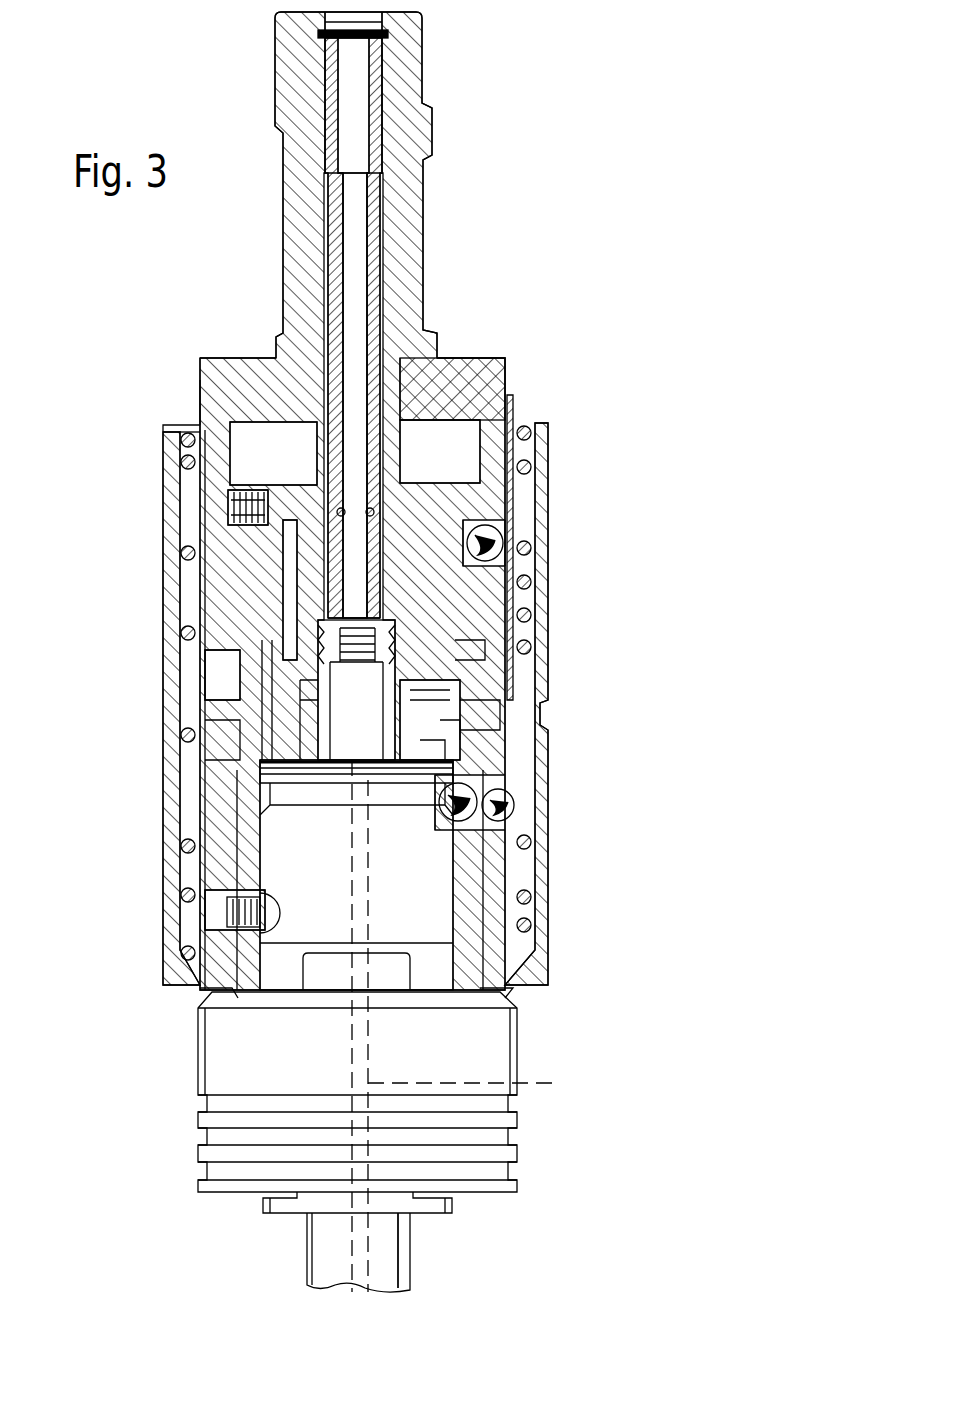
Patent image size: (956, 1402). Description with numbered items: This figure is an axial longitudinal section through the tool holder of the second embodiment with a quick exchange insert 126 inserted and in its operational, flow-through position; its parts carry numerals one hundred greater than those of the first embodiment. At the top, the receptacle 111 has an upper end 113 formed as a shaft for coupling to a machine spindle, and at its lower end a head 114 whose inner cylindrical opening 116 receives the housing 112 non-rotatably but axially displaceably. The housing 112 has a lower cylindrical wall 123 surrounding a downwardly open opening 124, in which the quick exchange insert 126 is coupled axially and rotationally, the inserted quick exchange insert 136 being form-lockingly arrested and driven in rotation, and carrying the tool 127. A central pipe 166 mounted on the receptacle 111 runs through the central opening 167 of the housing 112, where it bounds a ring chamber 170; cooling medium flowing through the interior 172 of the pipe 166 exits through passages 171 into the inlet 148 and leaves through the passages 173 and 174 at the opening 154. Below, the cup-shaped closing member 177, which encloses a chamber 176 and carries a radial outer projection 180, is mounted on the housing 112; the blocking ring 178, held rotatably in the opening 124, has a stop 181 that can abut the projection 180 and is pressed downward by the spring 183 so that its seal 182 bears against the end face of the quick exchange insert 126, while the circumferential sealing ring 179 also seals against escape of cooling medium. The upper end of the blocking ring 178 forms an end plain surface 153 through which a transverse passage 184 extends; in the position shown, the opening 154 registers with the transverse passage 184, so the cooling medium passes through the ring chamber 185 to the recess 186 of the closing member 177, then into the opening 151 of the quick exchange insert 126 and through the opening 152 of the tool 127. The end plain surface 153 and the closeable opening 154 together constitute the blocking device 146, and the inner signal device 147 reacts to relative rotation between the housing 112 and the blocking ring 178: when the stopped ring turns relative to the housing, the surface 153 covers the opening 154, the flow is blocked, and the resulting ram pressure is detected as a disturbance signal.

The receptacle 111 is at (515, 357).
The housing 112 is at (240, 550).
The upper end 113 is at (410, 62).
The head 114 is at (199, 380).
The cylindrical opening 116 is at (478, 360).
The cylindrical wall 123 is at (243, 870).
The opening 124 is at (267, 937).
The quick exchange insert 126 is at (472, 1057).
The tool 127 is at (307, 1272).
The quick exchange insert 136 is at (492, 527).
The blocking device 146 is at (290, 745).
The inner signal device 147 is at (280, 690).
The inlet 148 is at (322, 503).
The opening 151 is at (557, 1083).
The opening 152 is at (368, 1263).
The end plain surface 153 is at (465, 648).
The opening 154 is at (268, 664).
The pipe 166 is at (378, 208).
The central opening 167 is at (446, 360).
The ring chamber 170 is at (513, 405).
The passages 171 is at (520, 457).
The interior 172 is at (357, 245).
The passage 173 is at (213, 420).
The passage 174 is at (283, 600).
The chamber 176 is at (373, 785).
The closing member 177 is at (462, 712).
The blocking ring 178 is at (445, 778).
The circumferential sealing ring 179 is at (447, 725).
The radial outer projection 180 is at (317, 780).
The stop 181 is at (362, 752).
The seal 182 is at (482, 835).
The spring 183 is at (325, 690).
The transverse passage 184 is at (432, 690).
The ring chamber 185 is at (432, 745).
The recess 186 is at (375, 780).